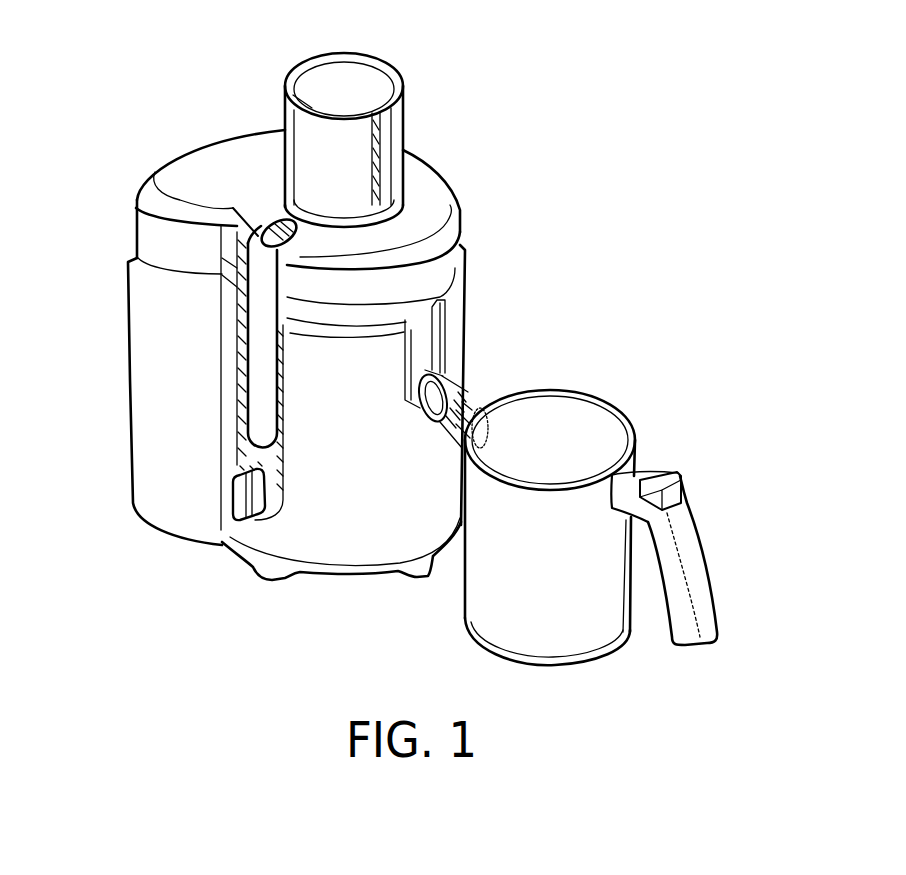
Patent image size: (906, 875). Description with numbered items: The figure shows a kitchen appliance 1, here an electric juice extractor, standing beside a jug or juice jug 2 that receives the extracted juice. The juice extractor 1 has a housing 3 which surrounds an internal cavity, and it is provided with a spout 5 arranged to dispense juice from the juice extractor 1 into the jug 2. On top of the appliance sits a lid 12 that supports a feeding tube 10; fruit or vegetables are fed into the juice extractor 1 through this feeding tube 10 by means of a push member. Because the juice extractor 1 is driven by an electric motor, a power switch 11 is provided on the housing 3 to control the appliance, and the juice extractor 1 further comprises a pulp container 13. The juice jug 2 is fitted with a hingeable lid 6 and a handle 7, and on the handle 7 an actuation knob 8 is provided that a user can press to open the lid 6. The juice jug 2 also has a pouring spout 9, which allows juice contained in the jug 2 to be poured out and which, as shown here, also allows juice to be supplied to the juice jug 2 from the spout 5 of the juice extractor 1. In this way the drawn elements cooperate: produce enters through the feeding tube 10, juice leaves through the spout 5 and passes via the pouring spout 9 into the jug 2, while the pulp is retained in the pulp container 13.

The kitchen appliance 1 is at (319, 332).
The juice jug 2 is at (614, 482).
The housing 3 is at (335, 558).
The spout 5 is at (453, 397).
The hingeable lid 6 is at (613, 433).
The handle 7 is at (697, 581).
The actuation knob 8 is at (667, 480).
The pouring spout 9 is at (483, 425).
The feeding tube 10 is at (302, 118).
The power switch 11 is at (233, 500).
The lid 12 is at (448, 247).
The pulp container 13 is at (140, 370).